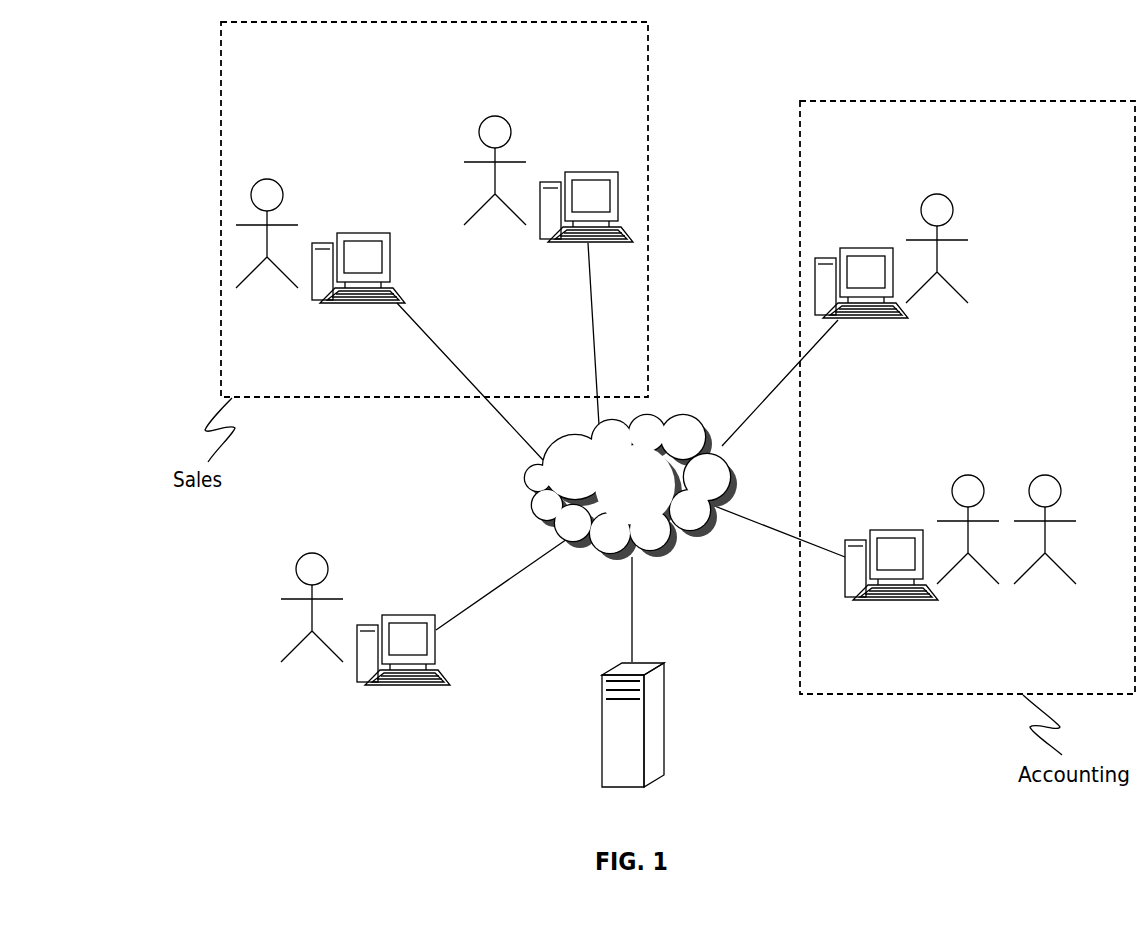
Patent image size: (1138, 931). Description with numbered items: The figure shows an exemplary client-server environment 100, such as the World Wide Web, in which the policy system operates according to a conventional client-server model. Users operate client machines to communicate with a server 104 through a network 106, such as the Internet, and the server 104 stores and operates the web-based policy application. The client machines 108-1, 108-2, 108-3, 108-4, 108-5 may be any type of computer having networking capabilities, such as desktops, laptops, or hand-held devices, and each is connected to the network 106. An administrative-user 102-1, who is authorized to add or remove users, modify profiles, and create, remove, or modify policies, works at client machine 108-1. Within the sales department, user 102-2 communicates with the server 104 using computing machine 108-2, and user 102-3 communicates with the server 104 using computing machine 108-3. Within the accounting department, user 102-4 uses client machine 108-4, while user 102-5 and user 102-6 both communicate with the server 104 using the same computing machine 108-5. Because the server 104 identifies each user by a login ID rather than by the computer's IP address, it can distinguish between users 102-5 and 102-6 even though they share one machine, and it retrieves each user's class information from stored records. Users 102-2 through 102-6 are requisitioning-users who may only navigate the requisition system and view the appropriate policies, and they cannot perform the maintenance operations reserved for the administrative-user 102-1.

The client-server environment 100 is at (767, 756).
The administrative-user 102-1 is at (328, 553).
The user 102-2 is at (280, 178).
The user 102-3 is at (510, 115).
The user 102-4 is at (953, 195).
The user 102-5 is at (983, 475).
The user 102-6 is at (1058, 475).
The server 104 is at (602, 757).
The network 106 is at (631, 487).
The client machine 108-1 is at (413, 683).
The computing machine 108-2 is at (322, 303).
The computing machine 108-3 is at (553, 242).
The client machine 108-4 is at (877, 320).
The computing machine 108-5 is at (905, 600).